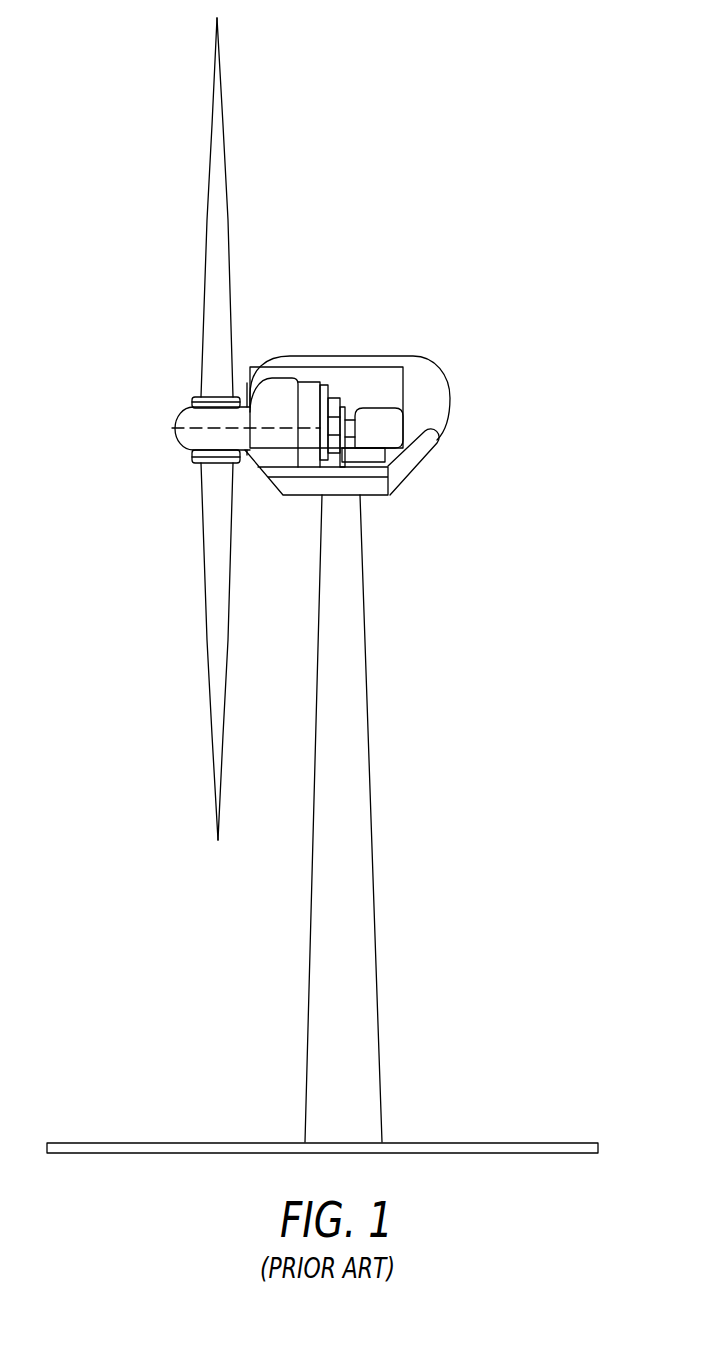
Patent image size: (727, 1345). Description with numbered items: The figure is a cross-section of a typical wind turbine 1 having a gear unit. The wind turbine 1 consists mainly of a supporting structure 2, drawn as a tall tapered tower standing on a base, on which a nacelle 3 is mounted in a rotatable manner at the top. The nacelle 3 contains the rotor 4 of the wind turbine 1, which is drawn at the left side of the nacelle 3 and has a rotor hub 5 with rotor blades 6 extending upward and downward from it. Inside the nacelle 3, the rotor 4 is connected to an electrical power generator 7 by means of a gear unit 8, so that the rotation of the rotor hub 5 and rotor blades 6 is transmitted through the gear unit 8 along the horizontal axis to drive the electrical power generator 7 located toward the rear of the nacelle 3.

The wind turbine 1 is at (432, 244).
The supporting structure 2 is at (361, 850).
The nacelle 3 is at (450, 385).
The rotor 4 is at (106, 401).
The rotor hub 5 is at (172, 430).
The rotor blades 6 is at (202, 377).
The electrical power generator 7 is at (390, 433).
The gear unit 8 is at (328, 384).